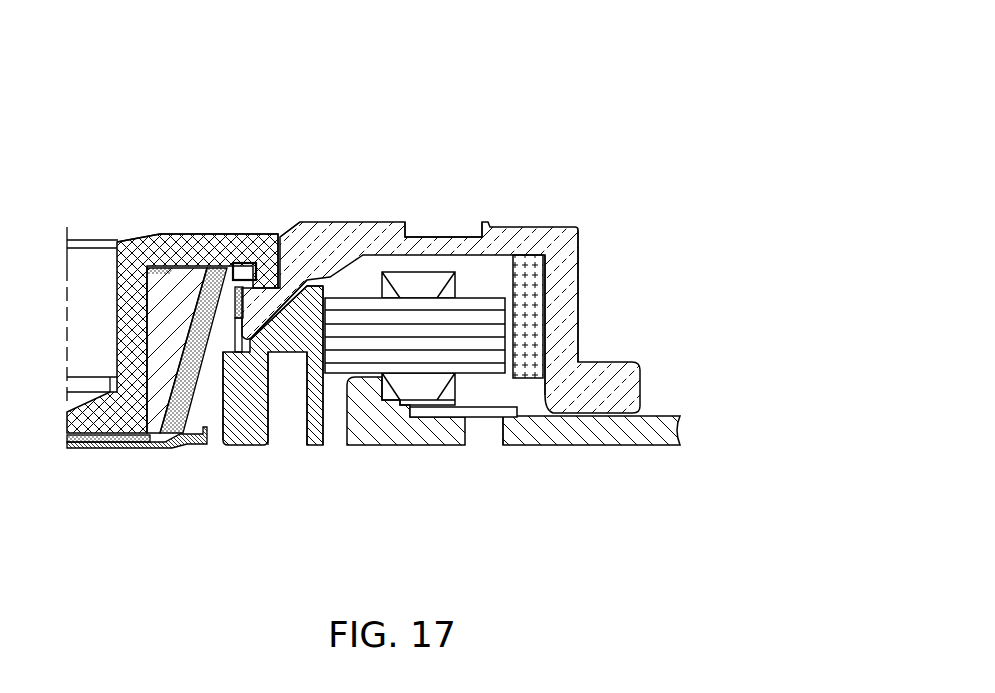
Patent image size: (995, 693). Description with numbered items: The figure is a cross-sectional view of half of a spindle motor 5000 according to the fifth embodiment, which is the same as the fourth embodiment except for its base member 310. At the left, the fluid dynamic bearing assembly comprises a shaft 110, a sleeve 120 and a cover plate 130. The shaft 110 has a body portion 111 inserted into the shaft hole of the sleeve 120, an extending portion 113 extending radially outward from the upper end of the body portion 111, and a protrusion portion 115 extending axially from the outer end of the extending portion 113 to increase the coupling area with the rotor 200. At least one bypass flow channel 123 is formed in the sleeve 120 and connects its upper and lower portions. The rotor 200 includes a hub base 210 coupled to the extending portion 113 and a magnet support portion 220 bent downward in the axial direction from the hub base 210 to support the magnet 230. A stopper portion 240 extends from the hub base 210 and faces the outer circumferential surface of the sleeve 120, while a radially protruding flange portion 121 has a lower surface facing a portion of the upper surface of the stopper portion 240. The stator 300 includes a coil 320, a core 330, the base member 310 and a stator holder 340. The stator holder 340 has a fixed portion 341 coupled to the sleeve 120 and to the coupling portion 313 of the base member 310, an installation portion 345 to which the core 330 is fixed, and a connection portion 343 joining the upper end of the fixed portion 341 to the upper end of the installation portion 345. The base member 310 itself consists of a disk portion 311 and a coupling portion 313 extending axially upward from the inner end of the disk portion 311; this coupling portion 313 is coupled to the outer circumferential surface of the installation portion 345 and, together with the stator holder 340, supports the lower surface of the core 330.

The spindle motor 5000 is at (537, 44).
The shaft 110 is at (305, 84).
The body portion 111 is at (122, 240).
The extending portion 113 is at (187, 237).
The protrusion portion 115 is at (265, 237).
The flange portion 121 is at (222, 237).
The sleeve 120 is at (157, 392).
The bypass flow channel 123 is at (183, 445).
The cover plate 130 is at (92, 450).
The rotor 200 is at (578, 192).
The hub base 210 is at (380, 237).
The magnet support portion 220 is at (578, 260).
The magnet 230 is at (527, 310).
The stopper portion 240 is at (323, 237).
The stator 300 is at (643, 562).
The base member 310 is at (497, 520).
The disk portion 311 is at (430, 427).
The coupling portion 313 is at (367, 400).
The coil 320 is at (447, 385).
The core 330 is at (483, 350).
The stator holder 340 is at (378, 512).
The fixed portion 341 is at (243, 445).
The connection portion 343 is at (287, 340).
The installation portion 345 is at (322, 392).